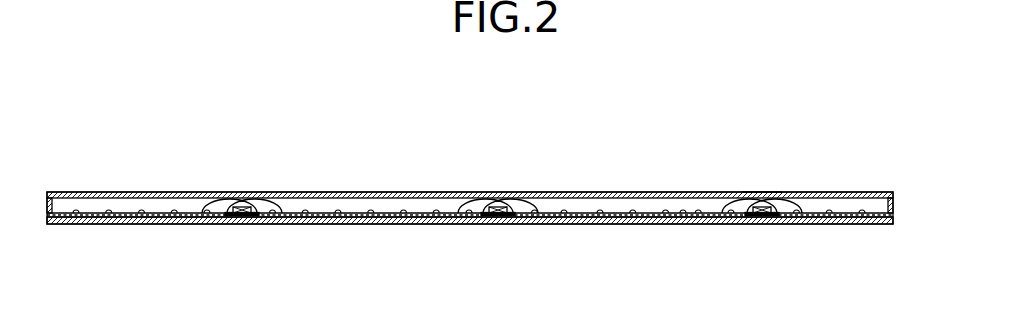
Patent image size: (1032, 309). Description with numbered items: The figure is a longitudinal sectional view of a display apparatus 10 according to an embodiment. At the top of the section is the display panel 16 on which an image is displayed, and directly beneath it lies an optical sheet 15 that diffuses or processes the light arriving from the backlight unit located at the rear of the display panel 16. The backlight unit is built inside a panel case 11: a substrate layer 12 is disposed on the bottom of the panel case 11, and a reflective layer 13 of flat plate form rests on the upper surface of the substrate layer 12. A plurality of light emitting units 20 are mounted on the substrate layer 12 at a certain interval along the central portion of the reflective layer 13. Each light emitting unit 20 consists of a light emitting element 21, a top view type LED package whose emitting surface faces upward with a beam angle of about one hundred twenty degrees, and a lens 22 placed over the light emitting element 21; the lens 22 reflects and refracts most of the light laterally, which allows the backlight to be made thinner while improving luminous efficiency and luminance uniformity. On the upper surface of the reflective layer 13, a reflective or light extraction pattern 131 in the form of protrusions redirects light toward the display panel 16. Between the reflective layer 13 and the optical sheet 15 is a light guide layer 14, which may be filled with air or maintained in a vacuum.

The display apparatus 10 is at (65, 156).
The panel case 11 is at (834, 224).
The substrate layer 12 is at (768, 216).
The reflective layer 13 is at (608, 217).
The light extraction pattern 131 is at (562, 213).
The light guide layer 14 is at (682, 212).
The optical sheet 15 is at (820, 192).
The display panel 16 is at (762, 192).
The light emitting unit 20 is at (252, 164).
The light emitting element 21 is at (279, 208).
The lens 22 is at (253, 203).